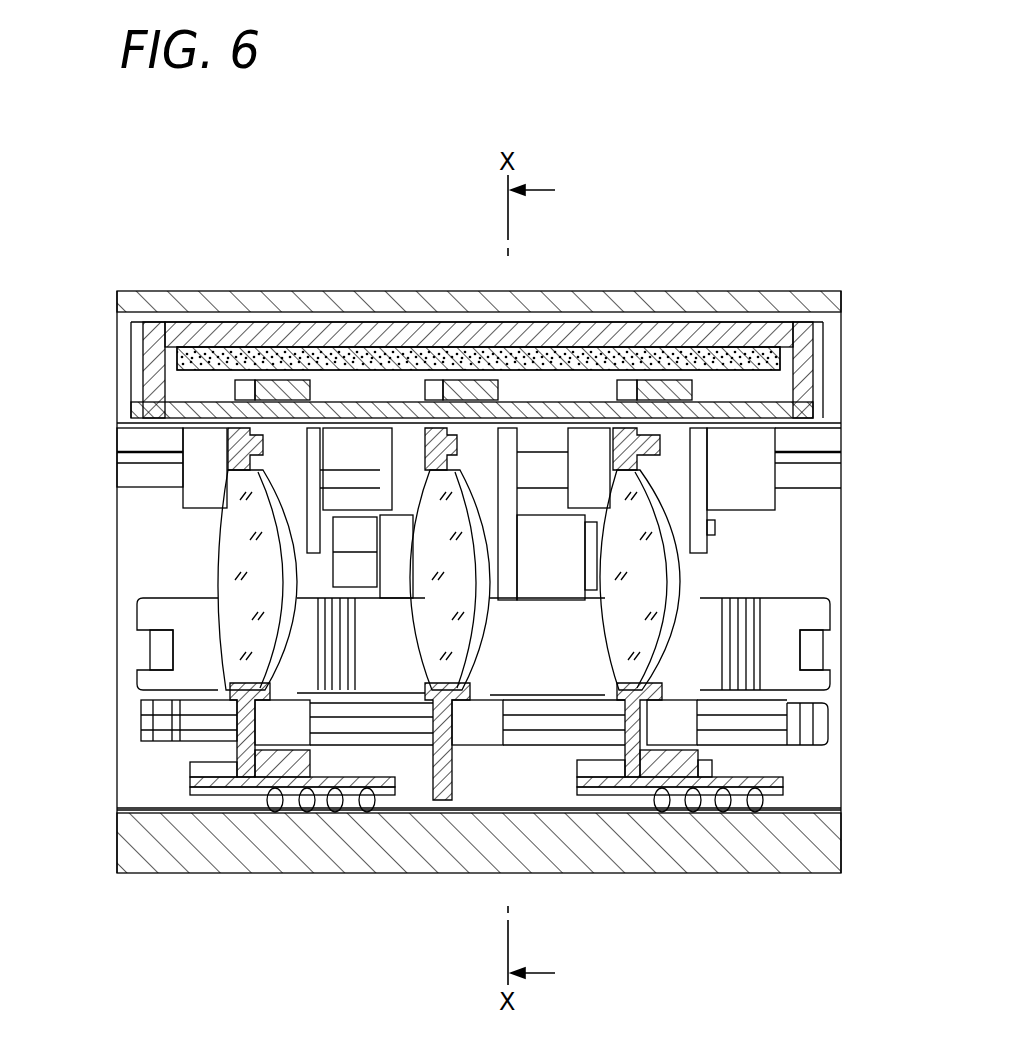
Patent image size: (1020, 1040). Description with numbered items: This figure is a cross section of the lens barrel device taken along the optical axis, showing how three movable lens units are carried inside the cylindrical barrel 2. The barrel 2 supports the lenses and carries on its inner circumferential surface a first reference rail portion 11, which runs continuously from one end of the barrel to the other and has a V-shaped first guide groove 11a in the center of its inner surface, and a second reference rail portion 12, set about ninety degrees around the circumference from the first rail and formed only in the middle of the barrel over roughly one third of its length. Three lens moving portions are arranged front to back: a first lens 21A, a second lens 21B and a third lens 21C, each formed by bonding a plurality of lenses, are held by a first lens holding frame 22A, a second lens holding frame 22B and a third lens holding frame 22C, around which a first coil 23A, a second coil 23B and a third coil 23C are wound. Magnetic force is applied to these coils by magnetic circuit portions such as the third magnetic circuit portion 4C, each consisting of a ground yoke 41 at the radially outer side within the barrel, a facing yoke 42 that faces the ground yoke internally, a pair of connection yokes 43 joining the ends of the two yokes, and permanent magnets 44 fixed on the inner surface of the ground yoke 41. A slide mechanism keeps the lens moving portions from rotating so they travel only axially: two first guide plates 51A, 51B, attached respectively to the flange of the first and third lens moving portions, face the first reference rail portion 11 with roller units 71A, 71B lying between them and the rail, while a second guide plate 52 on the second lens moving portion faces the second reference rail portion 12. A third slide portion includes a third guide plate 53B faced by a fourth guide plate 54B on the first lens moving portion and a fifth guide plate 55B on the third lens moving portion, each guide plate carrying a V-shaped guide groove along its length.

The barrel 2 is at (650, 878).
The first reference rail portion 11 is at (167, 805).
The first guide groove 11a is at (128, 806).
The second reference rail portion 12 is at (352, 520).
The first lens 21A is at (235, 540).
The second lens 21B is at (425, 520).
The third lens 21C is at (650, 565).
The first lens holding frame 22A is at (247, 805).
The second lens holding frame 22B is at (445, 805).
The third lens holding frame 22C is at (638, 805).
The first coil 23A is at (288, 395).
The second coil 23B is at (468, 395).
The third coil 23C is at (660, 395).
The ground yoke 41 is at (540, 330).
The facing yoke 42 is at (745, 410).
The connection yoke 43 is at (143, 361).
The permanent magnet 44 is at (595, 355).
The third magnetic circuit portion 4C is at (790, 618).
The first guide plate 51A is at (403, 770).
The first guide plate 51B is at (785, 775).
The second guide plate 52 is at (543, 575).
The third guide plate 53B is at (818, 478).
The fourth guide plate 54B is at (178, 470).
The fifth guide plate 55B is at (760, 448).
The roller unit 71A is at (302, 815).
The roller unit 71B is at (695, 815).